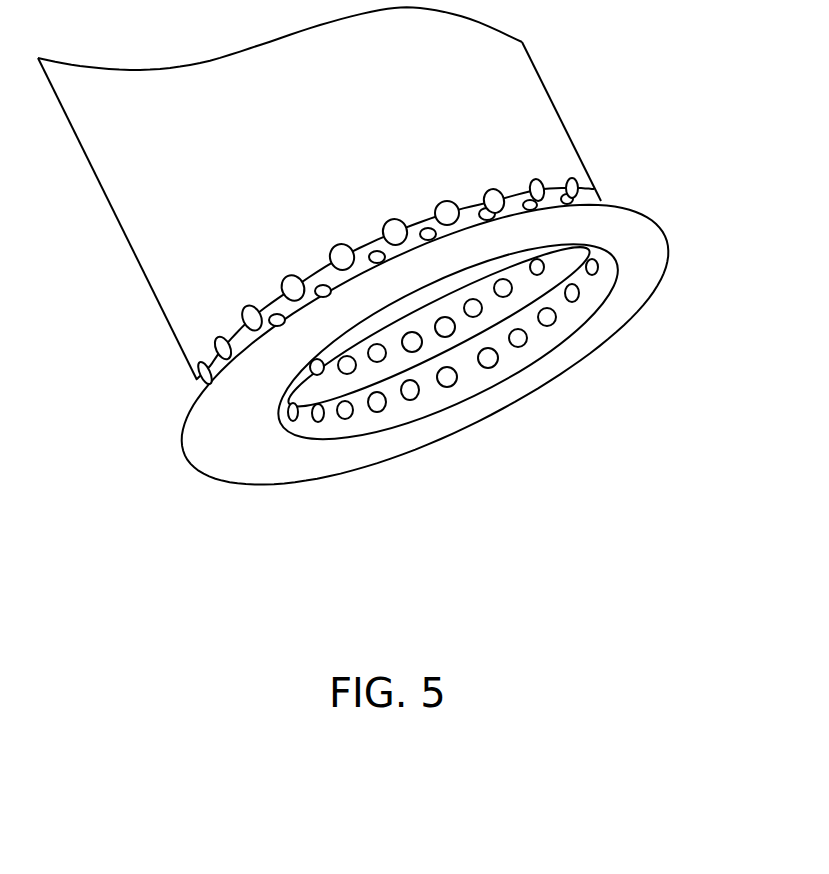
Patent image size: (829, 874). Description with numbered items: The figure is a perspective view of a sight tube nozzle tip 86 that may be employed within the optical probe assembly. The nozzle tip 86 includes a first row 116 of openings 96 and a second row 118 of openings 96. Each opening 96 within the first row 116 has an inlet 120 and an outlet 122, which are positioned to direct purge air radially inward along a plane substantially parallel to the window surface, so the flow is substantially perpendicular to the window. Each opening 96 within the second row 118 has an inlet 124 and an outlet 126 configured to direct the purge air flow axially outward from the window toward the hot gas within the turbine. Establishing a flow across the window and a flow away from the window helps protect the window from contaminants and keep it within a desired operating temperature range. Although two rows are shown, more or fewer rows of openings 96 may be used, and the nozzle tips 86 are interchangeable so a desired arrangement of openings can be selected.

The sight tube nozzle tip 86 is at (543, 93).
The first row 116 is at (390, 302).
The second row 118 is at (566, 312).
The inlet 120 is at (577, 182).
The outlet 122 is at (470, 296).
The inlet 124 is at (246, 345).
The outlet 126 is at (448, 380).
The openings 96 is at (448, 322).